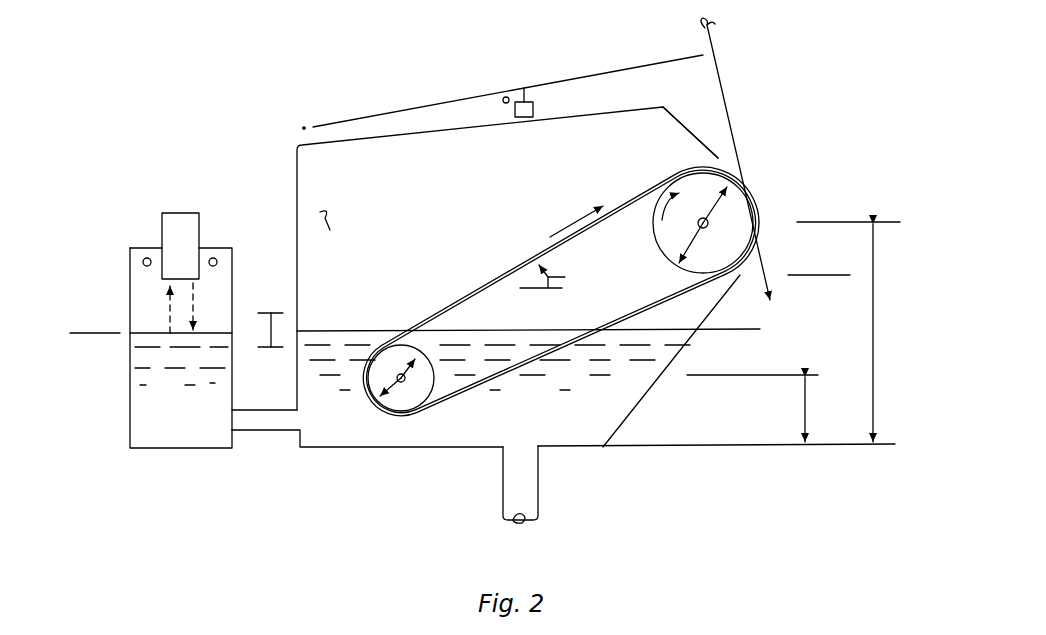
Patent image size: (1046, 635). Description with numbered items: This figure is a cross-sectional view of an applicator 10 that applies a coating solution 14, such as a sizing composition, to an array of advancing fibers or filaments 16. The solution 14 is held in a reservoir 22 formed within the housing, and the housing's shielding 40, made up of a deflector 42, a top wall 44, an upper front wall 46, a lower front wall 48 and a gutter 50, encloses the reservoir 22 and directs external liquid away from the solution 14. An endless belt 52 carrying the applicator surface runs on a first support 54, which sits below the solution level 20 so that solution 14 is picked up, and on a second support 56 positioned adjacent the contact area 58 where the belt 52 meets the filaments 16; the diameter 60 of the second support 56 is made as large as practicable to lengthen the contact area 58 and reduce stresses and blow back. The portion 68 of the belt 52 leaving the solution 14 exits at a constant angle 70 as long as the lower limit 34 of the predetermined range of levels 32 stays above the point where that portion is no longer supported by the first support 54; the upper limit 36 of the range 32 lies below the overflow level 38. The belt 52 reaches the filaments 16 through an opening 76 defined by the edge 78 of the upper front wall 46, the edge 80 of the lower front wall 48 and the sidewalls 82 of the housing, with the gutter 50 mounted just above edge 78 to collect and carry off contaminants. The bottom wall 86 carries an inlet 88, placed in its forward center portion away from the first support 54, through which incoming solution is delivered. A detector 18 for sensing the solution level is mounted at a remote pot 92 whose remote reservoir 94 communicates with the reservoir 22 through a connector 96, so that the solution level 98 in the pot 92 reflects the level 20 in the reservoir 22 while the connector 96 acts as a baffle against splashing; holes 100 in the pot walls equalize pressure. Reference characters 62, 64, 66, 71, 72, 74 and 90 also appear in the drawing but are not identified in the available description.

The applicator 10 is at (240, 113).
The coating solution 14 is at (166, 432).
The fibers or filaments 16 is at (715, 57).
The detector 18 is at (177, 212).
The solution level 20 is at (747, 328).
The reservoir 22 is at (380, 448).
The predetermined range of levels 32 is at (271, 331).
The lower limit 34 is at (273, 347).
The upper limit 36 is at (277, 312).
The overflow level 38 is at (805, 277).
The shielding 40 is at (293, 202).
The deflector 42 is at (387, 100).
The top wall 44 is at (576, 110).
The upper front wall 46 is at (697, 80).
The lower front wall 48 is at (747, 305).
The gutter 50 is at (709, 129).
The endless belt 52 is at (645, 303).
The first support 54 is at (424, 330).
The second support 56 is at (667, 157).
The contact area 58 is at (760, 207).
The diameter 60 is at (667, 257).
The lower roller diameter 62 is at (417, 357).
The fluid depth 64 is at (805, 407).
The overall height 66 is at (873, 342).
The portion of belt 68 is at (512, 225).
The constant angle 70 is at (559, 273).
The belt lower wrap 71 is at (390, 340).
The lower roller axle 72 is at (400, 382).
The upper roller axle 74 is at (690, 226).
The opening 76 is at (722, 167).
The edge of upper front wall 78 is at (718, 162).
The edge of lower front wall 80 is at (819, 256).
The sidewalls 82 is at (322, 222).
The bottom wall 86 is at (453, 448).
The inlet 88 is at (538, 500).
The cover latch 90 is at (507, 97).
The pot 92 is at (130, 283).
The remote reservoir 94 is at (130, 427).
The connector 96 is at (267, 432).
The solution level in pot 98 is at (90, 333).
The holes 100 is at (147, 257).